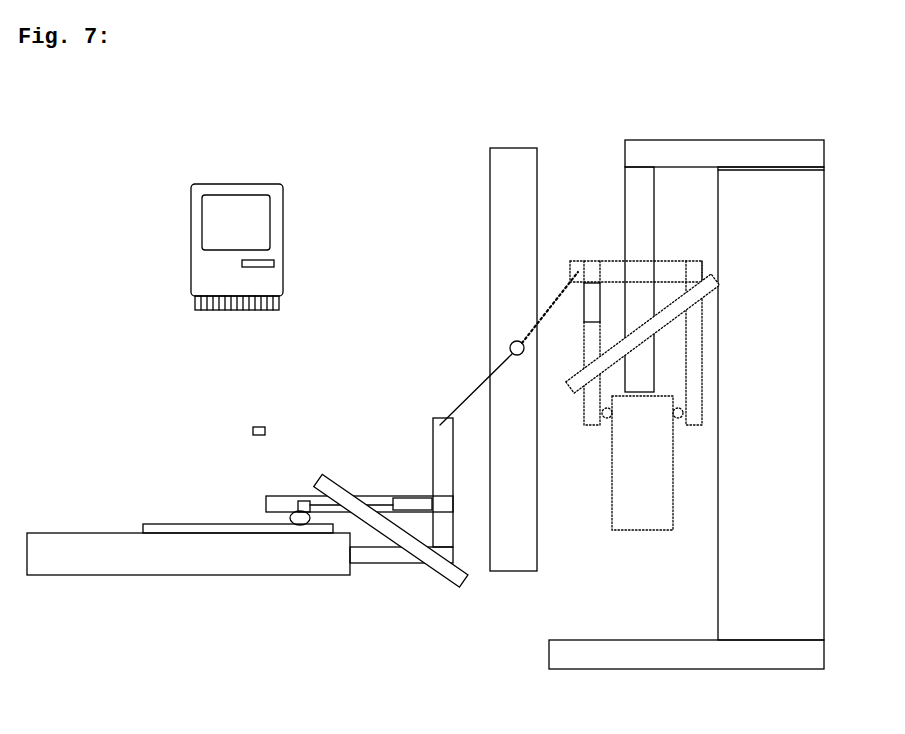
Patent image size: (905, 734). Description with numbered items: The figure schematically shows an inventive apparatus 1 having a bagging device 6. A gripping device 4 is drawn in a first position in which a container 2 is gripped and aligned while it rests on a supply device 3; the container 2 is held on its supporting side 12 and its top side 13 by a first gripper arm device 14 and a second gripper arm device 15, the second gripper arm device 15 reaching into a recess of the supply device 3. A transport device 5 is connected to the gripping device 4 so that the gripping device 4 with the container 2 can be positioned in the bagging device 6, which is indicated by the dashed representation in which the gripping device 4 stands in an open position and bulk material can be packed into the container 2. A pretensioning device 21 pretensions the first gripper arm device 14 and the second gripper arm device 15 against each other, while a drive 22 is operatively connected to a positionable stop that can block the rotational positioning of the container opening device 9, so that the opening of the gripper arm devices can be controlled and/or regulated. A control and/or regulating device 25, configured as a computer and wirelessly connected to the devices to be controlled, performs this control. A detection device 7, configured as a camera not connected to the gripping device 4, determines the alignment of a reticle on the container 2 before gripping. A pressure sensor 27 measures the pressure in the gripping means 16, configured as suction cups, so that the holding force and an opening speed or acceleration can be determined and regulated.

The apparatus 1 is at (393, 160).
The container 2 is at (186, 515).
The supply device 3 is at (46, 532).
The gripping device 4 is at (397, 576).
The transport device 5 is at (490, 333).
The bagging device 6 is at (625, 208).
The detection device 7 is at (266, 427).
The container opening device 9 is at (432, 573).
The supporting side 12 is at (268, 535).
The top side 13 is at (265, 524).
The first gripper arm device 14 is at (379, 495).
The second gripper arm device 15 is at (380, 564).
The gripping means 16 is at (293, 510).
The pretensioning device 21 is at (455, 525).
The drive 22 is at (410, 496).
The control and/or regulating device 25 is at (191, 222).
The pressure sensor 27 is at (305, 500).